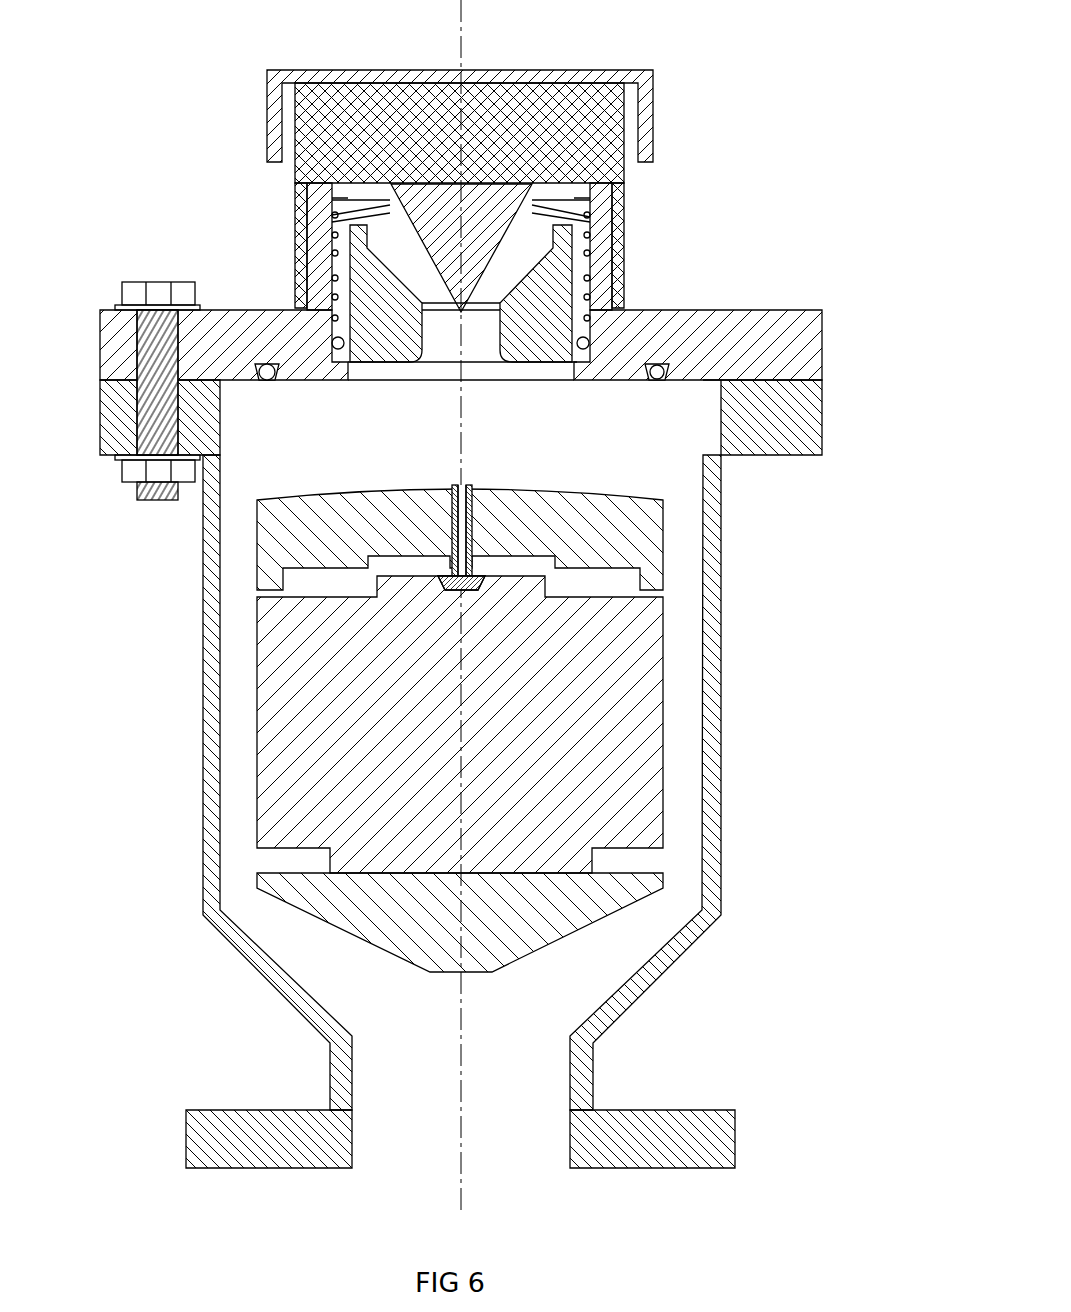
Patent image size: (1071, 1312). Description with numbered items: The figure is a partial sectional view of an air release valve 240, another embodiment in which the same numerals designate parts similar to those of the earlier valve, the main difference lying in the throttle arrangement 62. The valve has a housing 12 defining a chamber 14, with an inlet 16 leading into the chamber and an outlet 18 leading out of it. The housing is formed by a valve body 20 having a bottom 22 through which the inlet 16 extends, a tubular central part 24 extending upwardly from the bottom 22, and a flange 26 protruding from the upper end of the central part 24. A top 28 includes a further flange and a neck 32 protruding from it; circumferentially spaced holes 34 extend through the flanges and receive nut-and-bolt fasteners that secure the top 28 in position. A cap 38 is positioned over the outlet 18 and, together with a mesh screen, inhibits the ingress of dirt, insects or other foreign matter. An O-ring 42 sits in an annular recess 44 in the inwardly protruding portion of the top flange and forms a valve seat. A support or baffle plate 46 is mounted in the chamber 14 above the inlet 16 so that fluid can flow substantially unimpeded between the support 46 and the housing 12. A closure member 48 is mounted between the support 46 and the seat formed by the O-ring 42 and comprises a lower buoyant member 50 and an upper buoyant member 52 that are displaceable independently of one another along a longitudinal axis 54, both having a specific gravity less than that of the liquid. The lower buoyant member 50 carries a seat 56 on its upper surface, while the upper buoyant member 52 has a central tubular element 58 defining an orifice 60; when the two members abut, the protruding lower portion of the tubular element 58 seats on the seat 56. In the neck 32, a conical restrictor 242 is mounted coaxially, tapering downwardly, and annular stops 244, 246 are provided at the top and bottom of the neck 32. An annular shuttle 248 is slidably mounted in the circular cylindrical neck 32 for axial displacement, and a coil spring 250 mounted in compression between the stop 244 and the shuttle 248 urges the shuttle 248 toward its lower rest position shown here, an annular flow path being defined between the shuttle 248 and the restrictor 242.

The housing 12 is at (792, 233).
The chamber 14 is at (262, 480).
The inlet 16 is at (377, 1152).
The outlet 18 is at (342, 181).
The valve body 20 is at (175, 862).
The bottom 22 is at (213, 1110).
The tubular central part 24 is at (722, 787).
The flange 26 is at (821, 425).
The top 28 is at (772, 291).
The neck 32 is at (602, 209).
The holes 34 is at (123, 362).
The cap 38 is at (653, 122).
The O-ring 42 is at (656, 381).
The annular recess 44 is at (278, 381).
The support or baffle plate 46 is at (412, 958).
The closure member 48 is at (672, 605).
The lower buoyant member 50 is at (665, 682).
The upper buoyant member 52 is at (657, 528).
The longitudinal axis 54 is at (460, 1097).
The seat 56 is at (473, 571).
The tubular element 58 is at (472, 494).
The orifice 60 is at (450, 498).
The variable throttle arrangement 62 is at (306, 260).
The valve 240 is at (115, 78).
The conical restrictor 242 is at (475, 181).
The annular stop 244 is at (590, 181).
The annular stop 246 is at (577, 370).
The annular shuttle 248 is at (548, 352).
The coil spring 250 is at (333, 209).